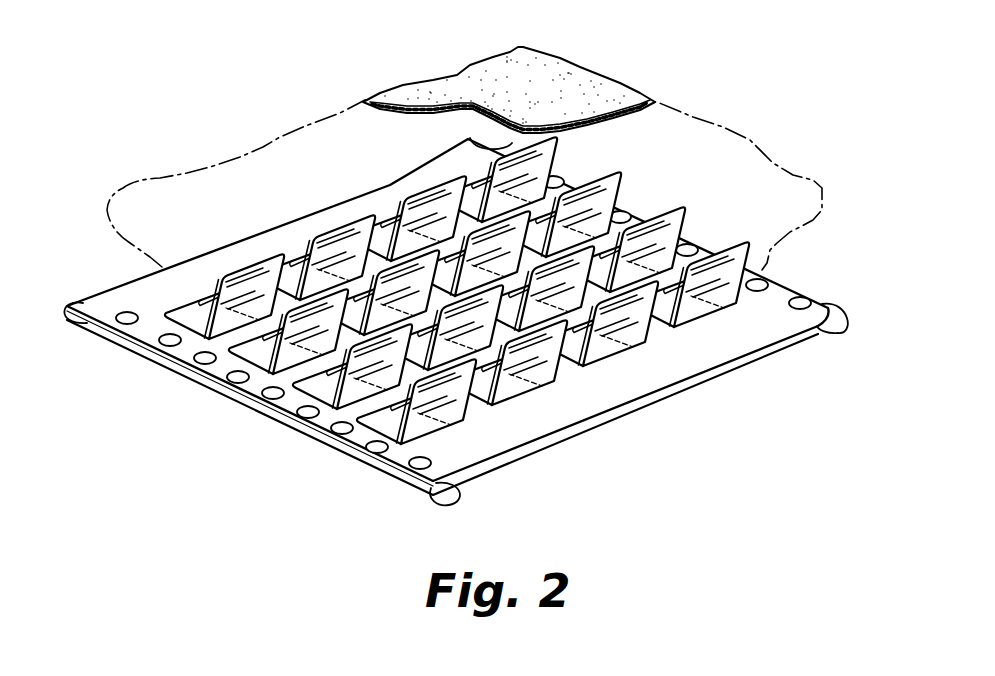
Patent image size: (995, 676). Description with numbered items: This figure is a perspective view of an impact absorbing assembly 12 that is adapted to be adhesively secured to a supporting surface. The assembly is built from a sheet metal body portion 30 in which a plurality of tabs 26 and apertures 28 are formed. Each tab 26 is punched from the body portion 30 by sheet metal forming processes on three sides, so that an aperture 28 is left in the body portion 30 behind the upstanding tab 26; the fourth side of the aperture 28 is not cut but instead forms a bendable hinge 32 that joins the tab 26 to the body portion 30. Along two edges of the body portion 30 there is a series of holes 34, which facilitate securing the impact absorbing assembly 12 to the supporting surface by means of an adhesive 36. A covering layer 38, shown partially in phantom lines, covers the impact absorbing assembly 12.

The impact absorbing assembly 12 is at (468, 330).
The tabs 26 is at (477, 314).
The apertures 28 is at (382, 436).
The body portion 30 is at (468, 349).
The bendable hinge 32 is at (623, 350).
The holes 34 is at (762, 282).
The adhesive 36 is at (848, 314).
The covering layer 38 is at (568, 84).